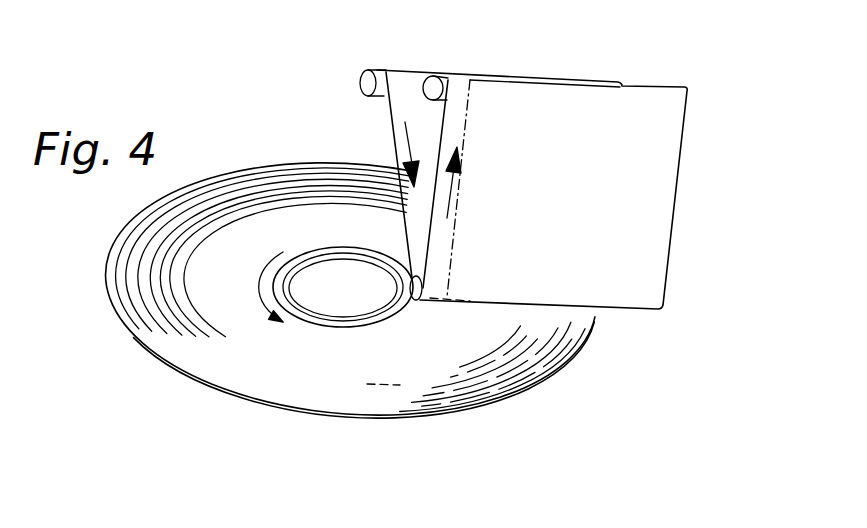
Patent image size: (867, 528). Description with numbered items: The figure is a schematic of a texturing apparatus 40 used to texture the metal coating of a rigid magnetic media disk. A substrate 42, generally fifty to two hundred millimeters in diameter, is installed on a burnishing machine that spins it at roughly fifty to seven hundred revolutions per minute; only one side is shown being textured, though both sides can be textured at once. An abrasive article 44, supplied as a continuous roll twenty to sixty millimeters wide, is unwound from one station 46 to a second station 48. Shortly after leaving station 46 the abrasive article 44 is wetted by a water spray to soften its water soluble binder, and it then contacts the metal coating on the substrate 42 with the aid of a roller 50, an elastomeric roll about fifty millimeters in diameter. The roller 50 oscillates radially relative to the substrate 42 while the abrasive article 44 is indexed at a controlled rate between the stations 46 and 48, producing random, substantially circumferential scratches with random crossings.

The texturing apparatus 40 is at (290, 146).
The substrate 42 is at (283, 412).
The abrasive article 44 is at (652, 207).
The station 46 is at (361, 82).
The second station 48 is at (434, 86).
The roller 50 is at (415, 298).